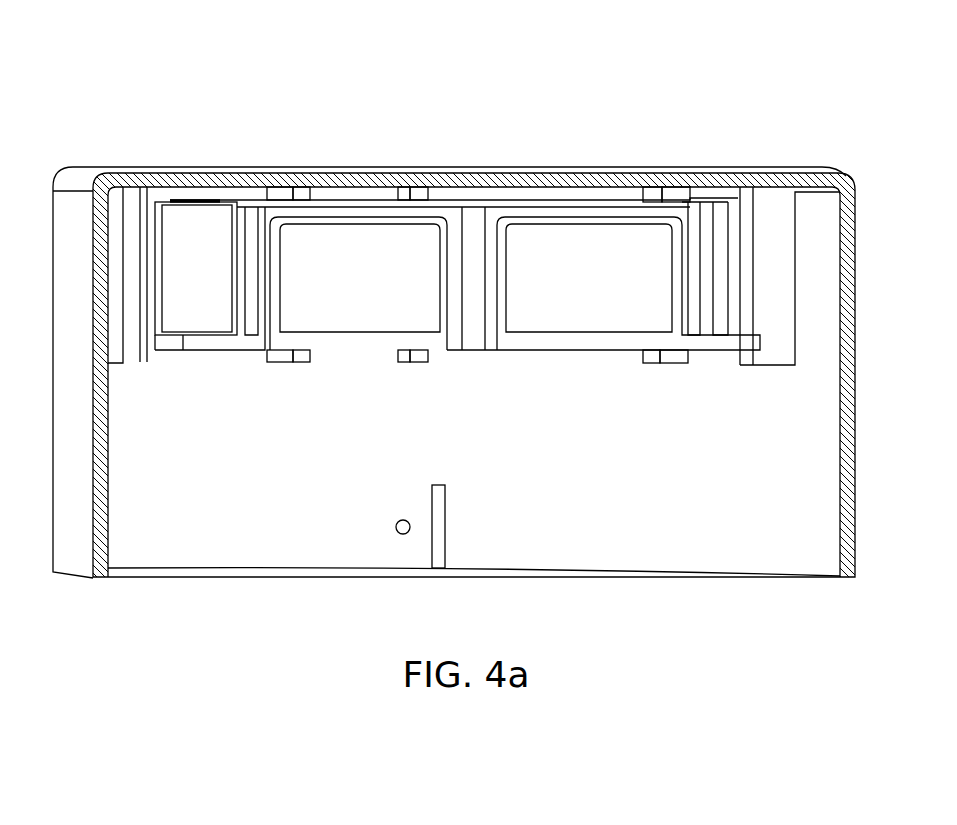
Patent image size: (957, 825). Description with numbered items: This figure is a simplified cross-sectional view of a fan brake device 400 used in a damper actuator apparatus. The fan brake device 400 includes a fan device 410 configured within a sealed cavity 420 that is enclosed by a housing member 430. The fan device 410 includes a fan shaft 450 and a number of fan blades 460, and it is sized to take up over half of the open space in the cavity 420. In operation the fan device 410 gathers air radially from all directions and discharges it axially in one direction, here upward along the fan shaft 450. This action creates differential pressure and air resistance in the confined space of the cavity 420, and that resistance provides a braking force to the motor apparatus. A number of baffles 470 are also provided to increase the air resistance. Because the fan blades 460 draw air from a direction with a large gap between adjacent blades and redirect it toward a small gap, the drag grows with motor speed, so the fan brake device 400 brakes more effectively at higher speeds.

The fan brake device 400 is at (642, 85).
The fan device 410 is at (454, 216).
The sealed cavity 420 is at (823, 336).
The housing member 430 is at (126, 172).
The fan shaft 450 is at (477, 354).
The fan blades 460 is at (205, 302).
The baffles 470 is at (765, 202).